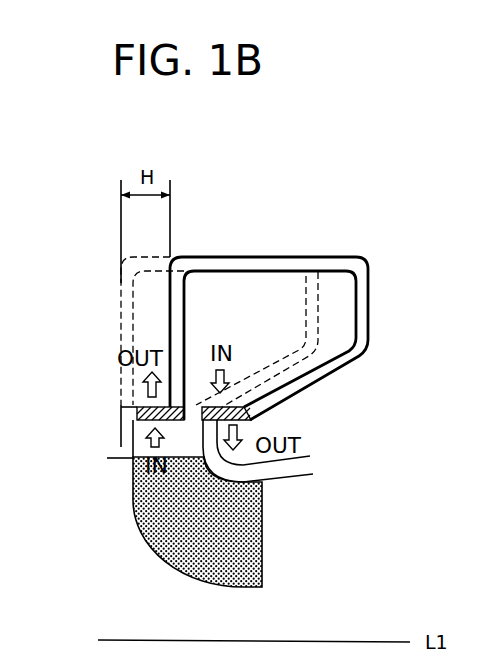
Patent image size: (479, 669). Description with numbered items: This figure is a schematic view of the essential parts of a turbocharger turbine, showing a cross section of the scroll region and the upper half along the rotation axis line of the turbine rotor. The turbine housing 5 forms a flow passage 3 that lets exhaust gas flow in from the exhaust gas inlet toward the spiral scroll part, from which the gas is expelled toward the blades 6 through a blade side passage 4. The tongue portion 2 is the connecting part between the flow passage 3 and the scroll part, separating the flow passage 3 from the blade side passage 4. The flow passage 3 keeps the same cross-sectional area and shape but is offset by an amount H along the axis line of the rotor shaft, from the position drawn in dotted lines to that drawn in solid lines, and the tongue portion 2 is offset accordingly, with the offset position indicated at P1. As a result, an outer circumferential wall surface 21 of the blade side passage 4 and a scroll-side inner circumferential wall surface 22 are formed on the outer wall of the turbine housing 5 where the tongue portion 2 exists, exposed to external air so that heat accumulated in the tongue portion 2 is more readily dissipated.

The tongue portion 2 is at (137, 427).
The outer circumferential wall surface 21 is at (142, 403).
The scroll-side inner circumferential wall surface 22 is at (255, 426).
The flow passage 3 is at (213, 296).
The blade side passage 4 is at (183, 442).
The turbine housing 5 is at (370, 305).
The blades 6 is at (238, 557).
The position P1 is at (195, 405).